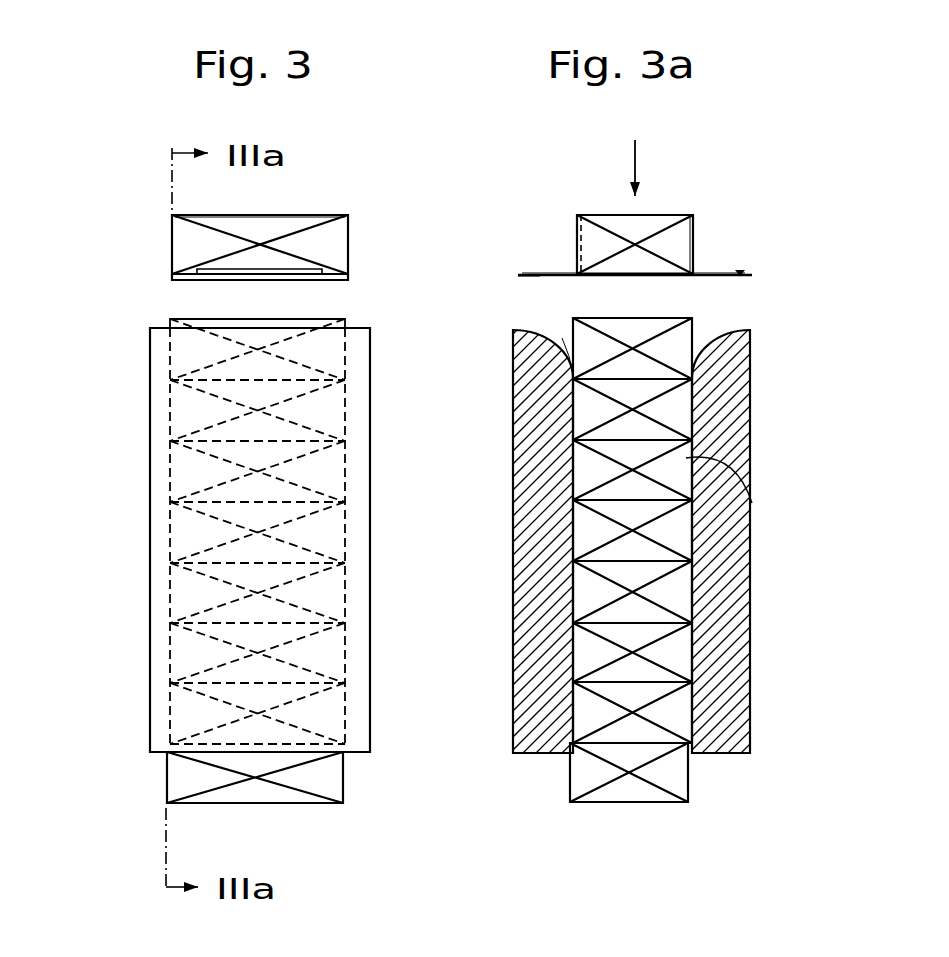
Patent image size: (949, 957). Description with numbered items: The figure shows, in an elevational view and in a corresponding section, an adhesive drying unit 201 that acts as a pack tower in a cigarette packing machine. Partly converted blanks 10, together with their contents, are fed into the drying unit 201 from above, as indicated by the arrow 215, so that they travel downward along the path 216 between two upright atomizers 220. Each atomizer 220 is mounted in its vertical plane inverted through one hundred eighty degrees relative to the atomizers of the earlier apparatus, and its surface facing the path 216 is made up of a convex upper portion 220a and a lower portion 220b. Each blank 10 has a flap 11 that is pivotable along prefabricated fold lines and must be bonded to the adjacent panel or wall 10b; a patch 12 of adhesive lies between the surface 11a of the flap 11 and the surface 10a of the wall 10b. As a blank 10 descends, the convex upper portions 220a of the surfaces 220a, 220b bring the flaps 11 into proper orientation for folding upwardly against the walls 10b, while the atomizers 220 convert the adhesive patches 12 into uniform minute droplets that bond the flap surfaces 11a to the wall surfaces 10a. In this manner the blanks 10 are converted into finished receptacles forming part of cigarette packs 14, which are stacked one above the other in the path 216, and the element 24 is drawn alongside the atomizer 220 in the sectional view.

In FIG. 3, the adhesive drying unit 201 is at (108, 543).
In FIG. 3, the blank 10 is at (300, 204).
In FIG. 3A, the blank 10 is at (592, 205).
In FIG. 3, the surface of panel 10a is at (303, 223).
In FIG. 3A, the surface of panel 10a is at (697, 236).
In FIG. 3A, the panel or wall 10b is at (580, 242).
In FIG. 3, the flap 11 is at (217, 281).
In FIG. 3A, the flap 11 is at (731, 276).
In FIG. 3A, the surface of flap 11a is at (708, 273).
In FIG. 3, the adhesive patch 12 is at (233, 270).
In FIG. 3A, the adhesive patch 12 is at (741, 272).
In FIG. 3, the cigarette pack 14 is at (254, 802).
In FIG. 3A, the cigarette pack 14 is at (637, 796).
In FIG. 3A, the housing wall 24 is at (740, 352).
In FIG. 3A, the arrow 215 is at (635, 168).
In FIG. 3A, the path 216 is at (752, 503).
In FIG. 3, the atomizer 220 is at (382, 654).
In FIG. 3A, the atomizer 220 is at (668, 540).
In FIG. 3A, the convex upper portion of atomizer surface 220a is at (520, 383).
In FIG. 3A, the lower portion of atomizer surface 220b is at (693, 530).